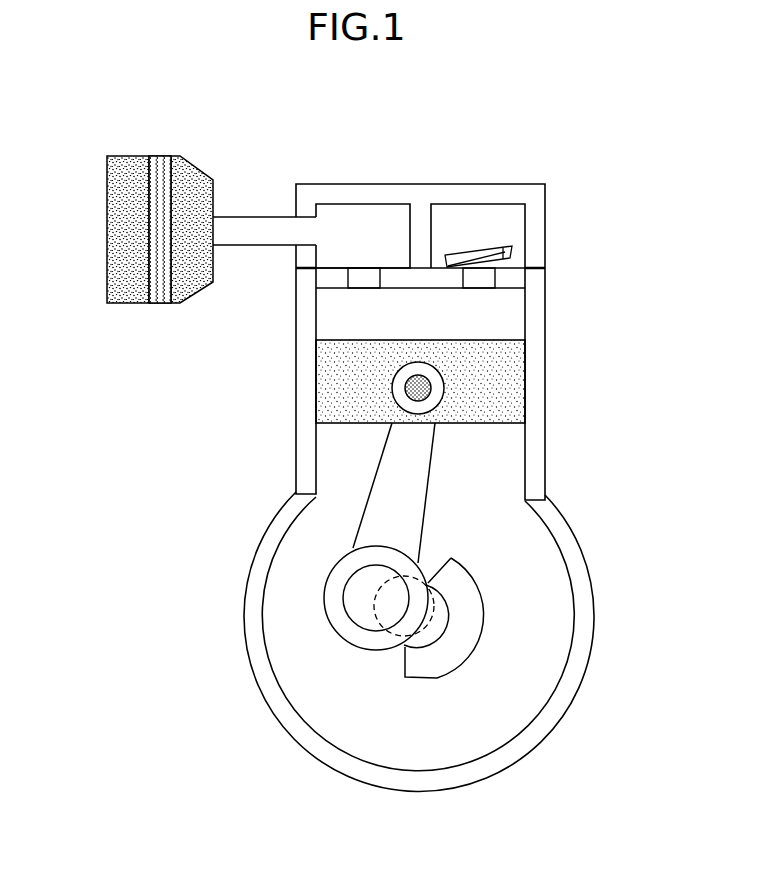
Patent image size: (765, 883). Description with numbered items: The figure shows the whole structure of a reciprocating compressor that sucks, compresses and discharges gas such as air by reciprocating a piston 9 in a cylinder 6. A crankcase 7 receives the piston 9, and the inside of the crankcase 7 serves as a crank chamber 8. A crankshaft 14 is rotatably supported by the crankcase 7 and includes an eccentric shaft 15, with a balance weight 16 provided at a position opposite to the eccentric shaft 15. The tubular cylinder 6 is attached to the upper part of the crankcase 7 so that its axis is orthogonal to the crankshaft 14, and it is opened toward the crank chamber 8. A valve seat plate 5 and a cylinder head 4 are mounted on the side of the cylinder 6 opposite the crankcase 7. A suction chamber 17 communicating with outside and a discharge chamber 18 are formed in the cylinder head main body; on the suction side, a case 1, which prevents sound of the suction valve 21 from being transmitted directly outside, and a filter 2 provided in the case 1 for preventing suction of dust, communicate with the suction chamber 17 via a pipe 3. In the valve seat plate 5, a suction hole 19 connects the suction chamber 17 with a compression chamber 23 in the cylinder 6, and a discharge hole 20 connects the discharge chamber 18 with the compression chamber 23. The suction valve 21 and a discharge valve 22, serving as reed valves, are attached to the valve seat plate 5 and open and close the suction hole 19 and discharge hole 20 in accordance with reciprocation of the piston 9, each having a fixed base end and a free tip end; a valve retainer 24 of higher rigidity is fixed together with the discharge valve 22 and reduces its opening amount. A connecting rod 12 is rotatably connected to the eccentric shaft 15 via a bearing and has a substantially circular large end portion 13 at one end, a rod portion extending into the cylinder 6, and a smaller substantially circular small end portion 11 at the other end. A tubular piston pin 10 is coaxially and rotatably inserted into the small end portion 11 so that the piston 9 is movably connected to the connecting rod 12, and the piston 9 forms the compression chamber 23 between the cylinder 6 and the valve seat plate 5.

The case 1 is at (127, 157).
The filter 2 is at (158, 156).
The pipe 3 is at (253, 217).
The cylinder head 4 is at (358, 186).
The valve seat plate 5 is at (535, 280).
The cylinder 6 is at (535, 363).
The crankcase 7 is at (285, 518).
The crank chamber 8 is at (367, 717).
The piston 9 is at (495, 395).
The piston pin 10 is at (422, 397).
The small end portion 11 is at (430, 410).
The connecting rod 12 is at (395, 498).
The large end portion 13 is at (337, 602).
The crankshaft 14 is at (438, 622).
The eccentric shaft 15 is at (377, 602).
The balance weight 16 is at (438, 663).
The suction chamber 17 is at (348, 230).
The discharge chamber 18 is at (455, 228).
The suction hole 19 is at (365, 278).
The discharge hole 20 is at (482, 280).
The suction valve 21 is at (388, 298).
The discharge valve 22 is at (502, 265).
The compression chamber 23 is at (408, 322).
The valve retainer 24 is at (505, 248).